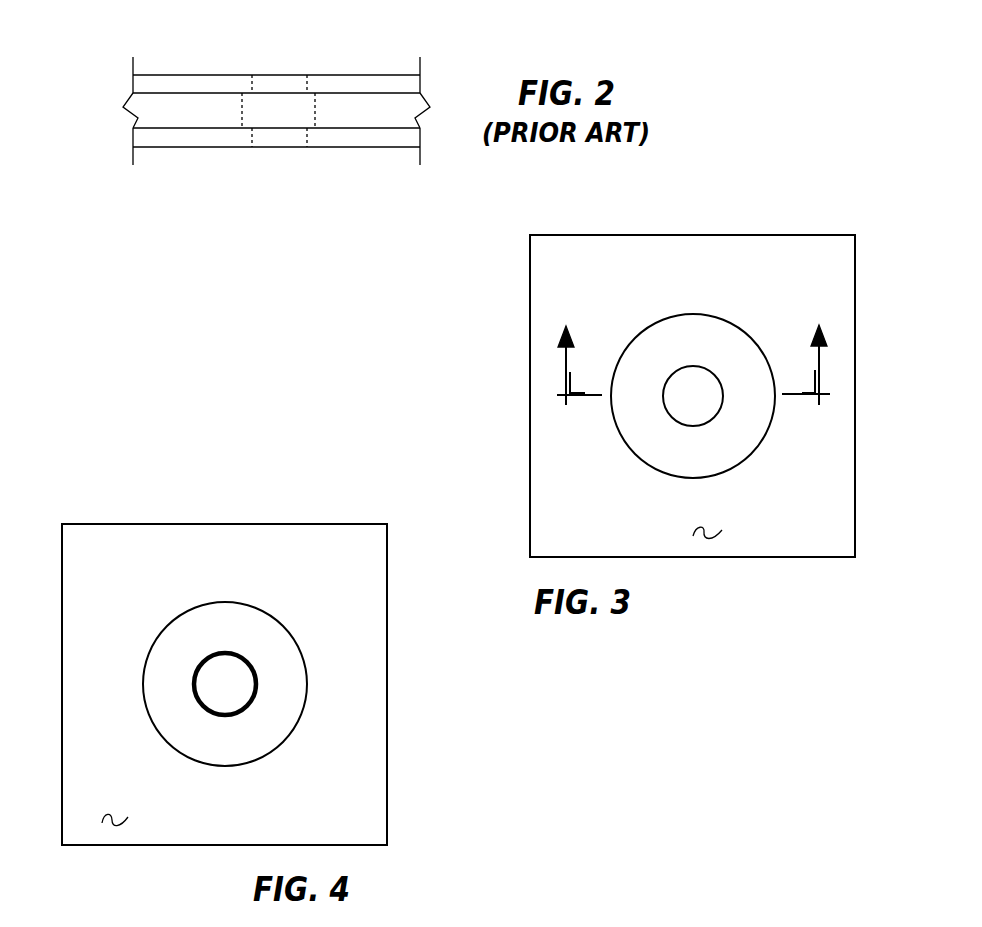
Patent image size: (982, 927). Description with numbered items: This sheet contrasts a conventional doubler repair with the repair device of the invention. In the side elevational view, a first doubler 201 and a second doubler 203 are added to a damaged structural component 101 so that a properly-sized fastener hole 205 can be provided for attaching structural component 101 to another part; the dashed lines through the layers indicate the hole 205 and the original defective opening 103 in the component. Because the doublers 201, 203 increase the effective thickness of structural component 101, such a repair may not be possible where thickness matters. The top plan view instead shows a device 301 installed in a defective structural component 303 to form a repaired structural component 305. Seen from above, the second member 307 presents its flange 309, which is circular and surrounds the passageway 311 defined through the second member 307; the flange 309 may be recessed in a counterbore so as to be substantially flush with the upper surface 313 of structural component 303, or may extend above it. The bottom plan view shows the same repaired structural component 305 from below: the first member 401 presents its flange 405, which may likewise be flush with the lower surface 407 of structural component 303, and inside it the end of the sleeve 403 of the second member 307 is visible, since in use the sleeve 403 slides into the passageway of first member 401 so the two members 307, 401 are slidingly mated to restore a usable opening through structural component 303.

In FIG. 2, the structural component 101 is at (357, 107).
In FIG. 2, the via 103 is at (315, 102).
In FIG. 2, the first doubler 201 is at (208, 80).
In FIG. 2, the second doubler 203 is at (198, 138).
In FIG. 2, the fastener hole 205 is at (252, 82).
In FIG. 3, the device 301 is at (693, 369).
In FIG. 4, the device 301 is at (280, 683).
In FIG. 3, the defective structural component 303 is at (548, 262).
In FIG. 4, the defective structural component 303 is at (202, 535).
In FIG. 3, the repaired structural component 305 is at (631, 402).
In FIG. 4, the repaired structural component 305 is at (260, 660).
In FIG. 3, the second member 307 is at (725, 473).
In FIG. 3, the flange 309 is at (672, 458).
In FIG. 3, the passageway 311 is at (690, 402).
In FIG. 3, the upper surface 313 is at (706, 538).
In FIG. 4, the first member 401 is at (275, 613).
In FIG. 4, the sleeve 403 is at (233, 690).
In FIG. 4, the flange 405 is at (187, 642).
In FIG. 4, the lower surface 407 is at (112, 823).